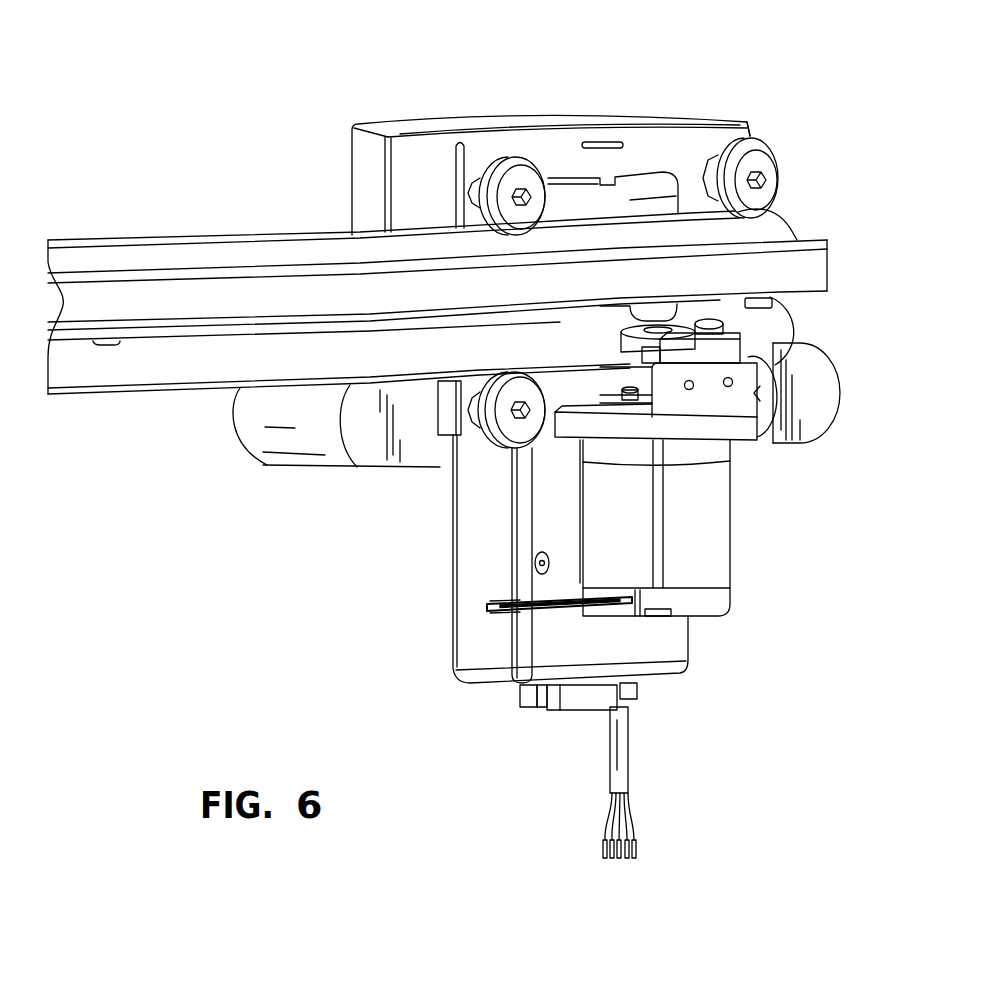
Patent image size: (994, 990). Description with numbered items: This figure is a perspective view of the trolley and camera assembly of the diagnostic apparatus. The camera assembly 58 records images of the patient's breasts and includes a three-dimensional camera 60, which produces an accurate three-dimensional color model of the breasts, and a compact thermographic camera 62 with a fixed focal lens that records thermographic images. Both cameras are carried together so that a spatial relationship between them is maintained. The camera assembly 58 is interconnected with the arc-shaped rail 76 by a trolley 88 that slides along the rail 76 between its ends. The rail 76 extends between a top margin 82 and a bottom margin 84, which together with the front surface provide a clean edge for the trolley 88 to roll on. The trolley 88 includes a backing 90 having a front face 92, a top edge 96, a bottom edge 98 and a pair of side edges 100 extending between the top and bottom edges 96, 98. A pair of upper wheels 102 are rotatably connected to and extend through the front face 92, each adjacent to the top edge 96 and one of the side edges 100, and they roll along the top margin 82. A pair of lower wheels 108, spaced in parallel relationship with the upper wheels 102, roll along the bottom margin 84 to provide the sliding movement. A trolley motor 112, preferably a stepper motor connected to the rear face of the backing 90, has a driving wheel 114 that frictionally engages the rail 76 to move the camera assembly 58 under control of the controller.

The camera assembly 58 is at (453, 637).
The three-dimensional camera 60 is at (352, 150).
The thermographic camera 62 is at (272, 457).
The rail 76 is at (121, 242).
The top margin 82 is at (218, 238).
The bottom margin 84 is at (148, 397).
The trolley 88 is at (748, 123).
The backing 90 is at (677, 150).
The front face 92 is at (563, 157).
The top edge 96 is at (647, 133).
The bottom edge 98 is at (550, 450).
The side edges 100 is at (445, 408).
The upper wheels 102 is at (503, 158).
The lower wheels 108 is at (477, 442).
The trolley motor 112 is at (720, 538).
The driving wheel 114 is at (622, 335).